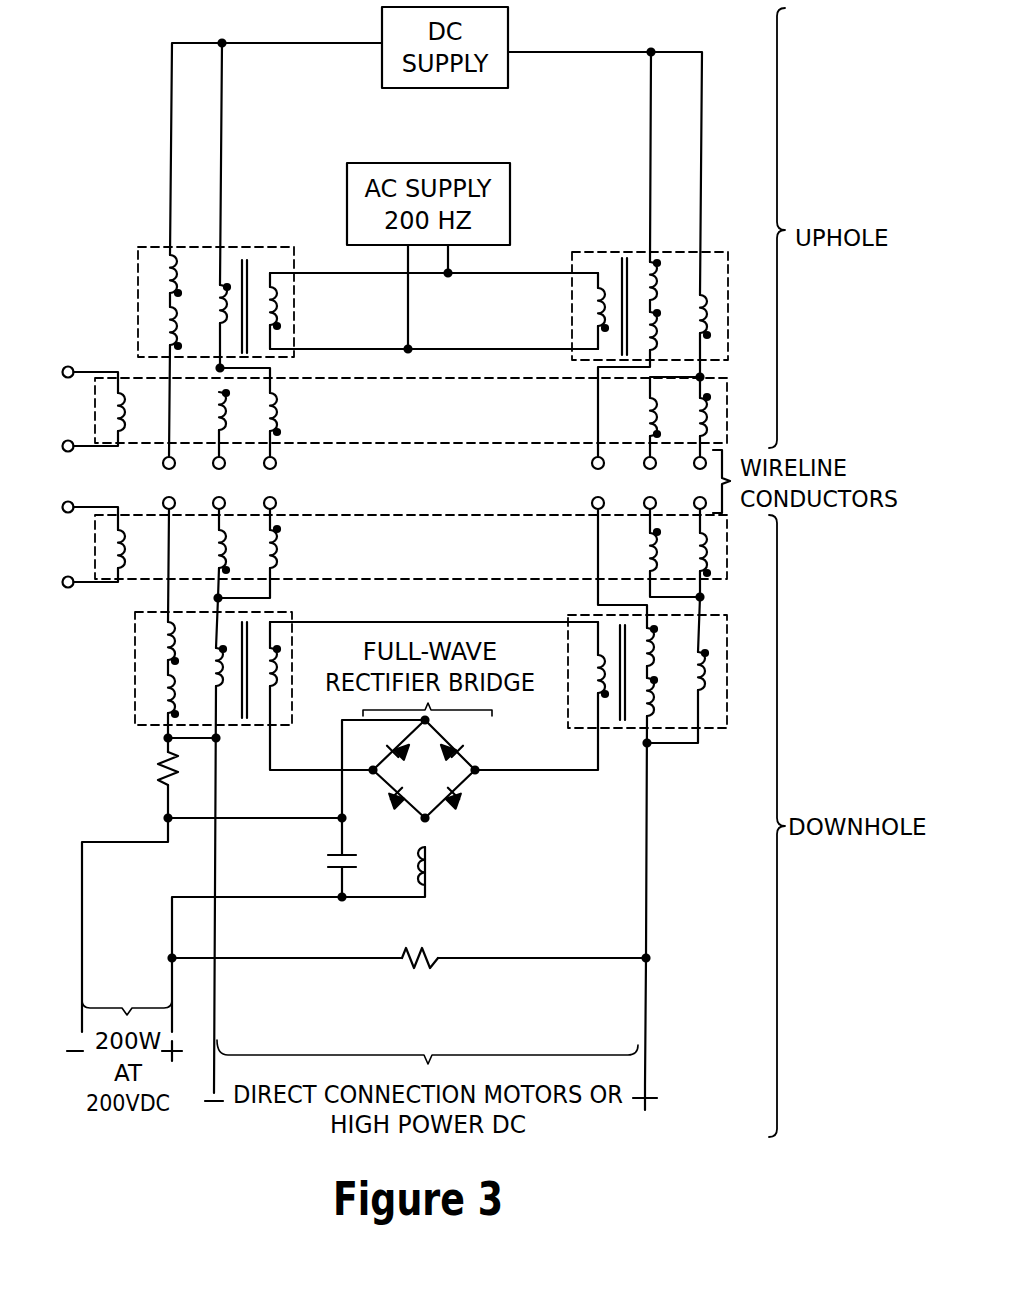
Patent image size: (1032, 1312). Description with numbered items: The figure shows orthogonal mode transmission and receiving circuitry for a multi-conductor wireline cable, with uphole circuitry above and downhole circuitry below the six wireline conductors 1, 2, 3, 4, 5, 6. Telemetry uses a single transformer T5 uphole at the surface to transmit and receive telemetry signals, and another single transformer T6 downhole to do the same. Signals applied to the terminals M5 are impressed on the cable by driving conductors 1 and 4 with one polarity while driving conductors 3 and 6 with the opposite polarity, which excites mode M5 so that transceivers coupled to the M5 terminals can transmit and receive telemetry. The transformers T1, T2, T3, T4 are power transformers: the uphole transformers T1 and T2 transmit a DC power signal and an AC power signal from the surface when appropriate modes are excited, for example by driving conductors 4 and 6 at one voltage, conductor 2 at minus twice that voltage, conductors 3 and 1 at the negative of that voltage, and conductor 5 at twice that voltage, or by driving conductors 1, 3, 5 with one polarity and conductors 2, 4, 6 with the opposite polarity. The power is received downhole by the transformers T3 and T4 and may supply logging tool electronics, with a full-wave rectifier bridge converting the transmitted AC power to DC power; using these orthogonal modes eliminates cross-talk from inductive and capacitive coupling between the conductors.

The power transformer T1 is at (138, 272).
The power transformer T2 is at (728, 276).
The downhole transformer T3 is at (727, 668).
The downhole transformer T4 is at (133, 668).
The telemetry transformer T5 is at (728, 431).
The telemetry transformer T6 is at (728, 571).
The telemetry terminals M5 is at (86, 477).
The conductor 1 is at (270, 483).
The conductor 2 is at (598, 483).
The conductor 3 is at (219, 483).
The conductor 4 is at (650, 483).
The conductor 5 is at (169, 483).
The conductor 6 is at (700, 483).